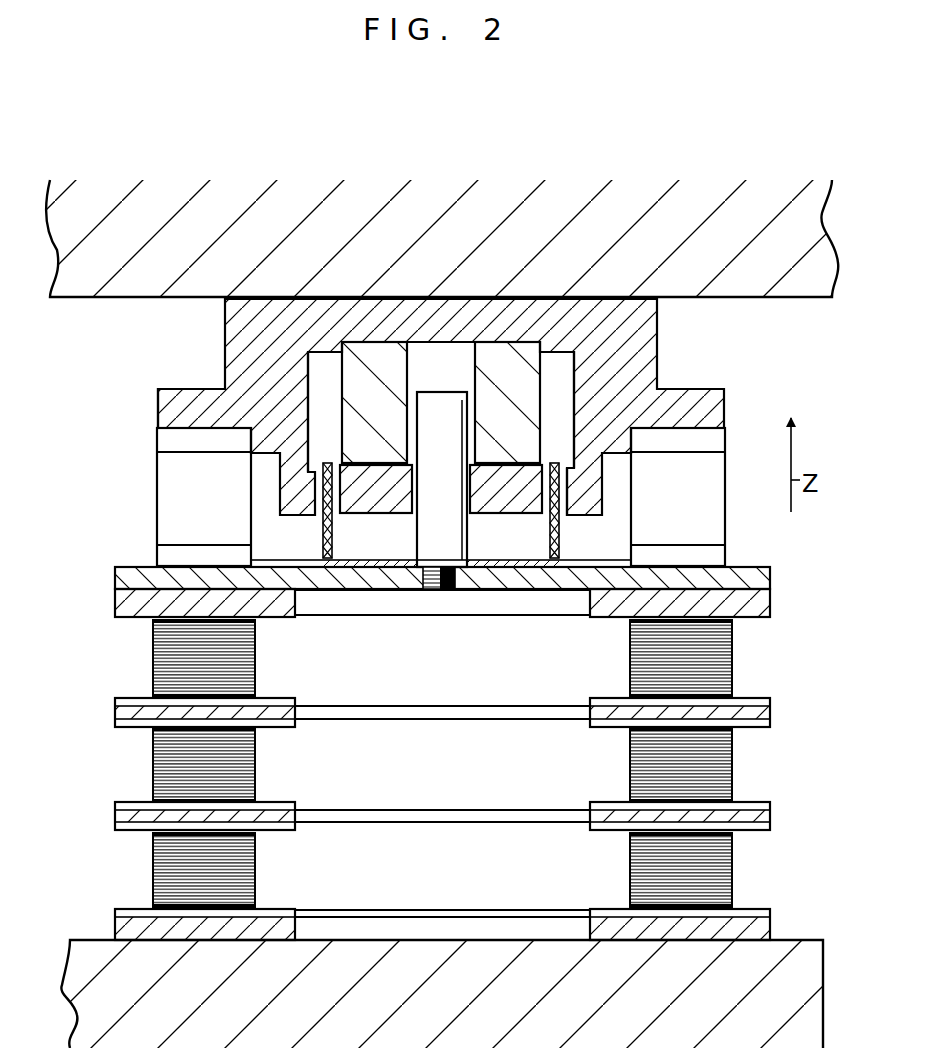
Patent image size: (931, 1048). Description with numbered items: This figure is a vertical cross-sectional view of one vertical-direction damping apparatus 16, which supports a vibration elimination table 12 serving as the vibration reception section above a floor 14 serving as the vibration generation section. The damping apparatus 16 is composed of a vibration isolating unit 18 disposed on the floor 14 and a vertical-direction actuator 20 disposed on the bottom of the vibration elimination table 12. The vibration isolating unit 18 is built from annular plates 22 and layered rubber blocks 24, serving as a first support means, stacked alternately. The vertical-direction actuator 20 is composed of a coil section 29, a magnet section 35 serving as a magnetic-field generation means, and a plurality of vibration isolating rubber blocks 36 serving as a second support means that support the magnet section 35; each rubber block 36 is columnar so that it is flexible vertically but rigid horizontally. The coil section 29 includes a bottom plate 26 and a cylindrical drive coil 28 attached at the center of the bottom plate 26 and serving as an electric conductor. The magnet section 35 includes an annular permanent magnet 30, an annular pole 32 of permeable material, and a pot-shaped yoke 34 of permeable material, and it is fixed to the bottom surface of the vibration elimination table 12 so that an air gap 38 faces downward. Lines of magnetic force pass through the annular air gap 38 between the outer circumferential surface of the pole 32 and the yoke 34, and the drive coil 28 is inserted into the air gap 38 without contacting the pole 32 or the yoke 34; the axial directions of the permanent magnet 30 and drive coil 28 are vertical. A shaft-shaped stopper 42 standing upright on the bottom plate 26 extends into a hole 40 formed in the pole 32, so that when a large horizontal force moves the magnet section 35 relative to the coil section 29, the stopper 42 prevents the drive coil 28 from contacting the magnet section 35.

The vibration elimination table 12 is at (68, 300).
The floor 14 is at (88, 940).
The vertical-direction damping apparatus 16 is at (810, 540).
The vibration isolating unit 18 is at (748, 665).
The vertical-direction actuator 20 is at (743, 535).
The annular plates 22 is at (113, 602).
The layered rubber blocks 24 is at (153, 663).
The bottom plate 26 is at (140, 567).
The cylindrical drive coil 28 is at (323, 533).
The coil section 29 is at (111, 578).
The annular permanent magnet 30 is at (553, 374).
The annular pole 32 is at (484, 516).
The pot-shaped yoke 34 is at (660, 338).
The magnet section 35 is at (155, 417).
The vibration isolating rubber blocks 36 is at (157, 497).
The air gap 38 is at (569, 520).
The hole 40 is at (432, 492).
The stopper 42 is at (472, 592).